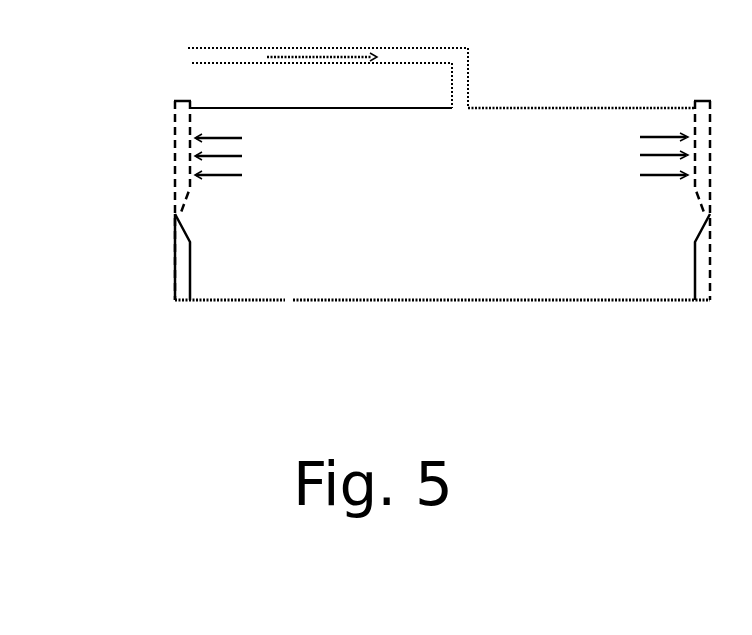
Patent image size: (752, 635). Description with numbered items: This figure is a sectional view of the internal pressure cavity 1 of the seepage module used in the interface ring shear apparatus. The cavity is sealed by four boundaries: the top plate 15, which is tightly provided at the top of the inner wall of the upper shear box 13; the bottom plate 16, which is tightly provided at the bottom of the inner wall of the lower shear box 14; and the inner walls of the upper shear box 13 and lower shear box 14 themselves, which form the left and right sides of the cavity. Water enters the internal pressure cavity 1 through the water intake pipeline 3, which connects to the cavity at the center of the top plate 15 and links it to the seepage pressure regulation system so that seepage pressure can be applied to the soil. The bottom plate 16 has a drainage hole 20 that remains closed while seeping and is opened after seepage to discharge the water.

The internal pressure cavity 1 is at (323, 178).
The water intake pipeline 3 is at (328, 54).
The upper shear box 13 is at (173, 157).
The lower shear box 14 is at (173, 263).
The top plate 15 is at (599, 100).
The bottom plate 16 is at (597, 298).
The drainage hole 20 is at (290, 305).